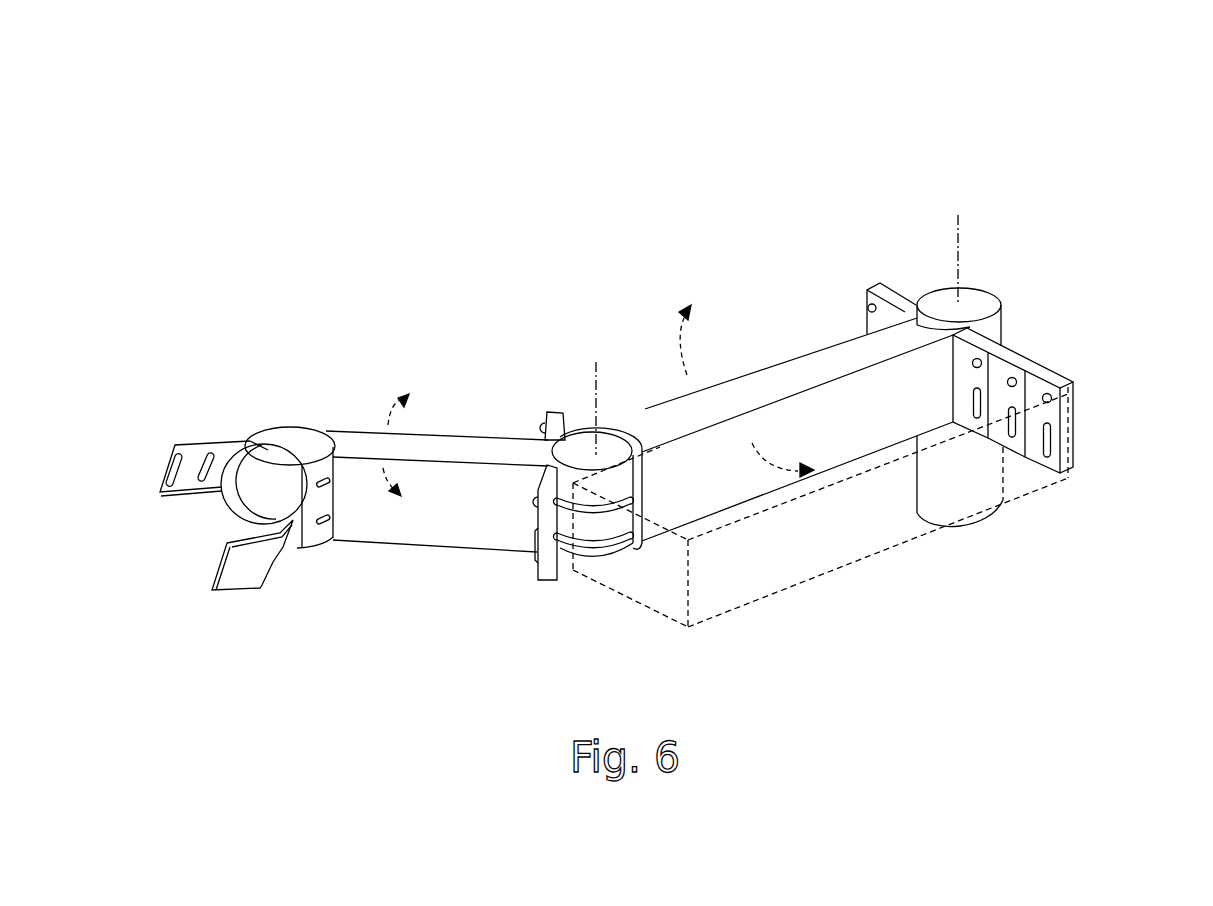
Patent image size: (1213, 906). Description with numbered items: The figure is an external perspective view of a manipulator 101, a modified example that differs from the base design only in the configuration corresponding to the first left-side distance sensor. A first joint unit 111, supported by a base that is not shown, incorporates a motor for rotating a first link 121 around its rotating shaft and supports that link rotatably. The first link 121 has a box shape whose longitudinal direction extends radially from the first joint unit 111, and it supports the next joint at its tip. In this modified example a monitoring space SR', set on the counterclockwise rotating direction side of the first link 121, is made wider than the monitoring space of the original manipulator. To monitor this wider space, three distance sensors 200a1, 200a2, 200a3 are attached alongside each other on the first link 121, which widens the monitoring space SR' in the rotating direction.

The manipulator 101 is at (667, 336).
The first joint unit 111 is at (985, 298).
The first link 121 is at (755, 377).
The distance sensor 200a1 is at (988, 338).
The distance sensor 200a2 is at (1025, 362).
The distance sensor 200a3 is at (1063, 380).
The monitoring space SR' is at (820, 507).